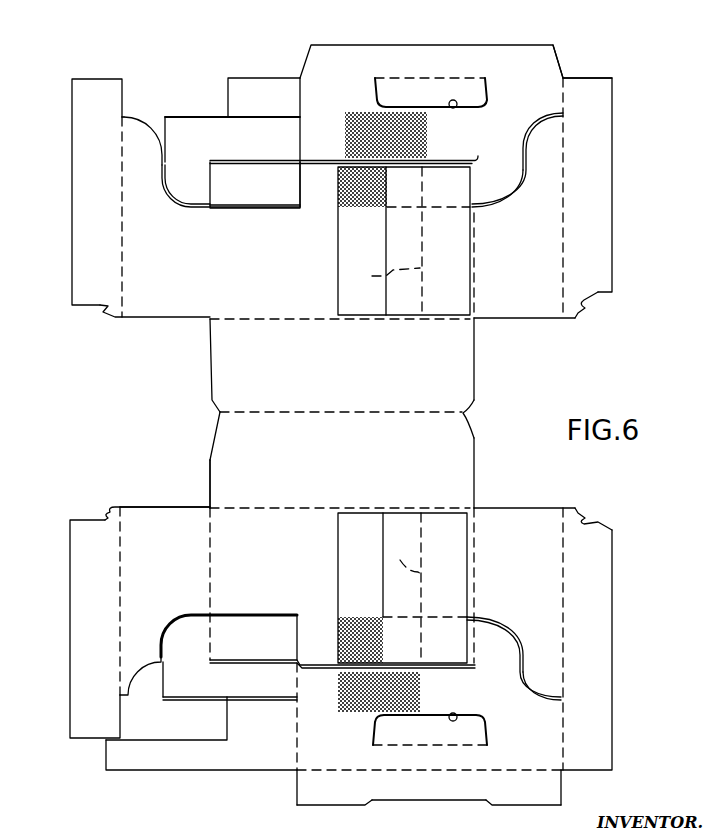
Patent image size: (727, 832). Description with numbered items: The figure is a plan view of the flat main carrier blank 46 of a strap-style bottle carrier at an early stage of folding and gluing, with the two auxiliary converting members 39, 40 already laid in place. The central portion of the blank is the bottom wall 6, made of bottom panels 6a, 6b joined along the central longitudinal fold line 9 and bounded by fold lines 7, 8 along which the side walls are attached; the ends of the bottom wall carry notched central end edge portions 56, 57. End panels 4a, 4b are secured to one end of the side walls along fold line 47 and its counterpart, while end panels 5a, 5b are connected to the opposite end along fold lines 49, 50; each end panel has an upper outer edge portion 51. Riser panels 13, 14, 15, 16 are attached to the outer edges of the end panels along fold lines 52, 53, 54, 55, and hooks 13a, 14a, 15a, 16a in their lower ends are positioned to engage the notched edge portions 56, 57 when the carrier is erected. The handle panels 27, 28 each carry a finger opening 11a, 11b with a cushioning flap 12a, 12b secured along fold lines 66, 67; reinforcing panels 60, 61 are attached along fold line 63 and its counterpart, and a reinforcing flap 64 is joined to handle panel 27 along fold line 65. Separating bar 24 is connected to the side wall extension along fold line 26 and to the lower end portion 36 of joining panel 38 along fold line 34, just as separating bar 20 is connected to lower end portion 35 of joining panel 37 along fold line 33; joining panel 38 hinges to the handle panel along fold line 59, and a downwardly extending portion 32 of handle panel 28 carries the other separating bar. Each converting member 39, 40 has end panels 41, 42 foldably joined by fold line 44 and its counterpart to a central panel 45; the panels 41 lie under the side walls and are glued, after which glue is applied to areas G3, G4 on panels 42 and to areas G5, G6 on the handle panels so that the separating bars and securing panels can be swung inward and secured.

The end panel 4a is at (143, 512).
The end panel 4b is at (150, 320).
The end panel 5a is at (533, 520).
The end panel 5b is at (520, 312).
The bottom wall 6 is at (478, 440).
The bottom panel 6a is at (350, 474).
The bottom panel 6b is at (288, 383).
The fold line 7 is at (400, 508).
The fold line 8 is at (418, 320).
The fold line 9 is at (395, 410).
The finger opening 11a is at (453, 713).
The finger opening 11b is at (452, 109).
The cushioning flap 12a is at (390, 748).
The cushioning flap 12b is at (460, 88).
The riser panel 13 is at (85, 590).
The hook 13a is at (105, 507).
The riser panel 14 is at (90, 212).
The hook 14a is at (100, 315).
The riser panel 15 is at (603, 655).
The hook 15a is at (575, 508).
The riser panel 16 is at (612, 231).
The hook 16a is at (577, 310).
The separating bar 20 is at (255, 630).
The separating bar 24 is at (246, 194).
The fold line 26 is at (302, 178).
The handle panel 27 is at (527, 770).
The handle panel 28 is at (343, 70).
The downwardly extending portion 32 is at (518, 176).
The fold line 33 is at (208, 655).
The fold line 34 is at (208, 190).
The lower end portion 35 is at (185, 630).
The lower end portion 36 is at (185, 200).
The joining panel 37 is at (203, 692).
The joining panel 38 is at (240, 150).
The auxiliary carrier blank 39 is at (337, 252).
The auxiliary carrier blank 40 is at (337, 548).
The end panel 41 is at (386, 420).
The end panel 42 is at (337, 290).
The fold line 44 is at (385, 222).
The central panel 45 is at (438, 288).
The blank 46 is at (556, 45).
The fold line 47 is at (212, 545).
The fold line 49 is at (478, 585).
The fold line 50 is at (476, 232).
The upper outer edge portion 51 is at (133, 137).
The fold line 52 is at (120, 572).
The fold line 53 is at (120, 270).
The fold line 54 is at (565, 597).
The fold line 55 is at (563, 282).
The notched central end edge portion 56 is at (207, 400).
The notched central end edge portion 57 is at (470, 410).
The fold line 59 is at (303, 156).
The reinforcing panel 60 is at (250, 765).
The reinforcing panel 61 is at (258, 88).
The fold line 63 is at (302, 87).
The reinforcing flap 64 is at (402, 792).
The fold line 65 is at (505, 768).
The fold line 66 is at (435, 745).
The fold line 67 is at (418, 75).
The glue area G3 is at (338, 650).
The glue area G4 is at (340, 200).
The glue area G5 is at (340, 700).
The glue area G6 is at (345, 127).